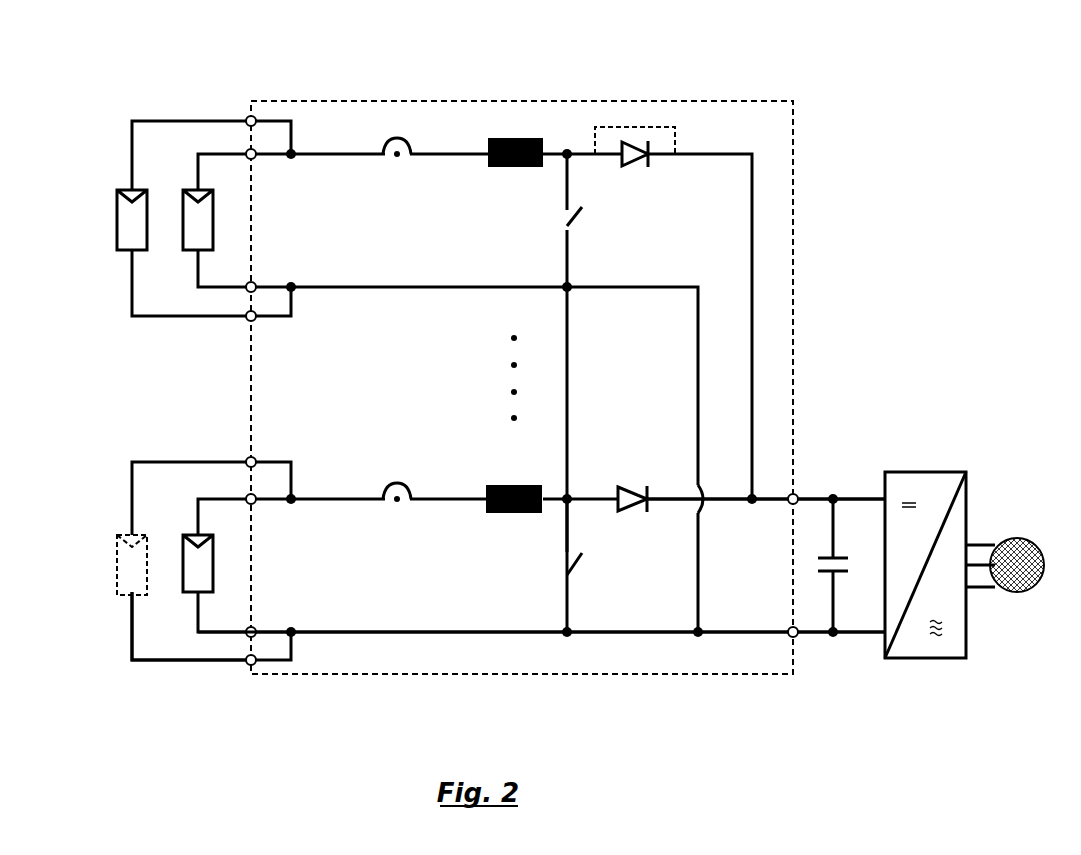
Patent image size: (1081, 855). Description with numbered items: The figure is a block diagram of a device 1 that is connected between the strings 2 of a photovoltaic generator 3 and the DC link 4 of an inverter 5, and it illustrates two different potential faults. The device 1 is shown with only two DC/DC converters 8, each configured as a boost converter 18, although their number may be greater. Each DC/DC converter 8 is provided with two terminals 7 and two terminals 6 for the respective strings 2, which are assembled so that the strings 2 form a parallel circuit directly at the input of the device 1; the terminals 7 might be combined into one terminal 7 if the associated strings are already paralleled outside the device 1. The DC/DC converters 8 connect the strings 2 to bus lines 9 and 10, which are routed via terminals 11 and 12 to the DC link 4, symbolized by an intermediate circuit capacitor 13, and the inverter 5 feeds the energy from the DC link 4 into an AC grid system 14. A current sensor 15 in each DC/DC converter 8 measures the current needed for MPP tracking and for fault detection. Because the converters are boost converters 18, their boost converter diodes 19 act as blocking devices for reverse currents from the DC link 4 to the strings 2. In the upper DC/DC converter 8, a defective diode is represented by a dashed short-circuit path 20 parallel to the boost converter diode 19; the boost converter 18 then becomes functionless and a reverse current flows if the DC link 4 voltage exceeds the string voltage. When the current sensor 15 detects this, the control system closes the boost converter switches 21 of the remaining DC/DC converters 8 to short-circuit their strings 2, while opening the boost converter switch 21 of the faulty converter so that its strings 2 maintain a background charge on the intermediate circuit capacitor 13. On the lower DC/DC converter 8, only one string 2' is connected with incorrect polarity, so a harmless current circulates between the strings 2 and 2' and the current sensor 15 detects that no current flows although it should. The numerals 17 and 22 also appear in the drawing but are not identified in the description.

The device 1 is at (641, 96).
The string 2 is at (141, 456).
The string connected with incorrect polarity 2' is at (109, 605).
The photovoltaic generator 3 is at (132, 664).
The DC link 4 is at (835, 494).
The inverter 5 is at (916, 472).
The terminal 6 is at (247, 291).
The terminal 7 is at (247, 150).
The DC/DC converter 8 is at (508, 134).
The bus line 9 is at (727, 503).
The bus line 10 is at (744, 635).
The terminal 11 is at (797, 494).
The terminal 12 is at (796, 637).
The intermediate circuit capacitor 13 is at (846, 575).
The AC grid system 14 is at (1030, 590).
The current sensor 15 is at (394, 134).
The fuse contact 17 is at (384, 165).
The boost converter 18 is at (567, 144).
The boost converter diode 19 is at (632, 162).
The short-circuit path 20 is at (676, 125).
The boost converter switch 21 is at (582, 222).
The converter unit 22 is at (508, 170).